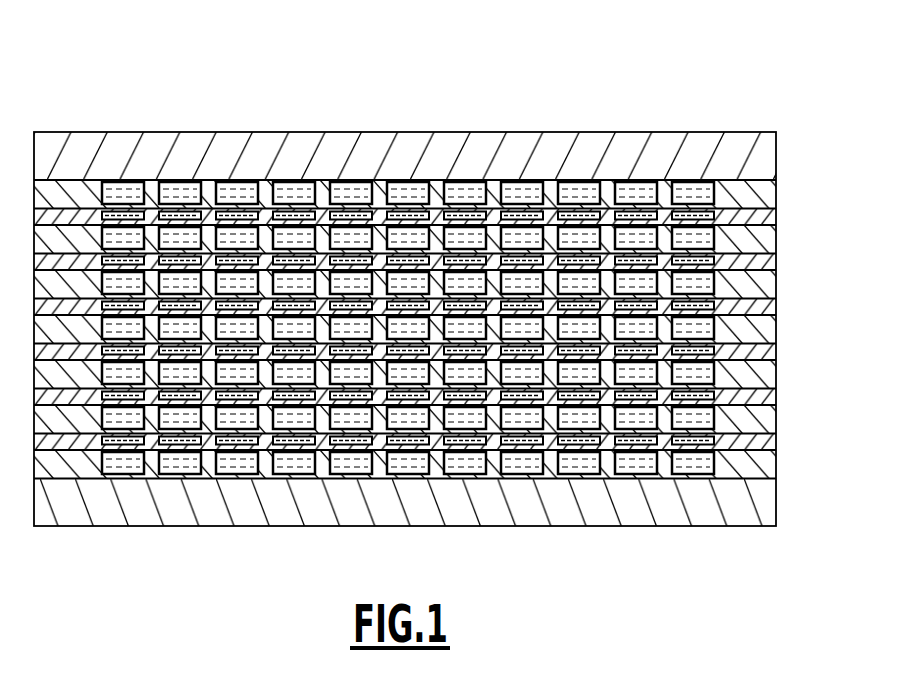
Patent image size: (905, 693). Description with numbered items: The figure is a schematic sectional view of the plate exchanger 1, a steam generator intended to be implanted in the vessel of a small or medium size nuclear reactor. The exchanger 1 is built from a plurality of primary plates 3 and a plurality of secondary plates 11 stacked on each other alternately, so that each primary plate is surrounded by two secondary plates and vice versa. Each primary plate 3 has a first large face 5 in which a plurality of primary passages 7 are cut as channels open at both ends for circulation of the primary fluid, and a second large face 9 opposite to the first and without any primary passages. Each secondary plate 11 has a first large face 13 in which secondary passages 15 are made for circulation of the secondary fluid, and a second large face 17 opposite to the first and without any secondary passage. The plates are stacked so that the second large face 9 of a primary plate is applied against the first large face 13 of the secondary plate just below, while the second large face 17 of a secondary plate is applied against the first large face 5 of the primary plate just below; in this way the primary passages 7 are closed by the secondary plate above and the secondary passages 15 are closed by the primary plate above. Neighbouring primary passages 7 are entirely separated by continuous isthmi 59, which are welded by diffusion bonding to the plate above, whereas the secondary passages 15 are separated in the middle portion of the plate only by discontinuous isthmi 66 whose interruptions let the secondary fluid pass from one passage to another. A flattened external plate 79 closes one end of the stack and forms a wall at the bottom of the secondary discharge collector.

The plate exchanger 1 is at (66, 108).
The flattened external plate 79 is at (203, 132).
The first large face 5 is at (726, 173).
The primary plate 3 is at (779, 193).
The secondary plate 11 is at (779, 263).
The primary passage 7 is at (692, 185).
The second large face 9 is at (710, 214).
The continuous isthmus 59 is at (662, 192).
The second large face 17 is at (474, 278).
The secondary passage 15 is at (530, 257).
The discontinuous isthmus 66 is at (562, 255).
The first large face 13 is at (571, 255).